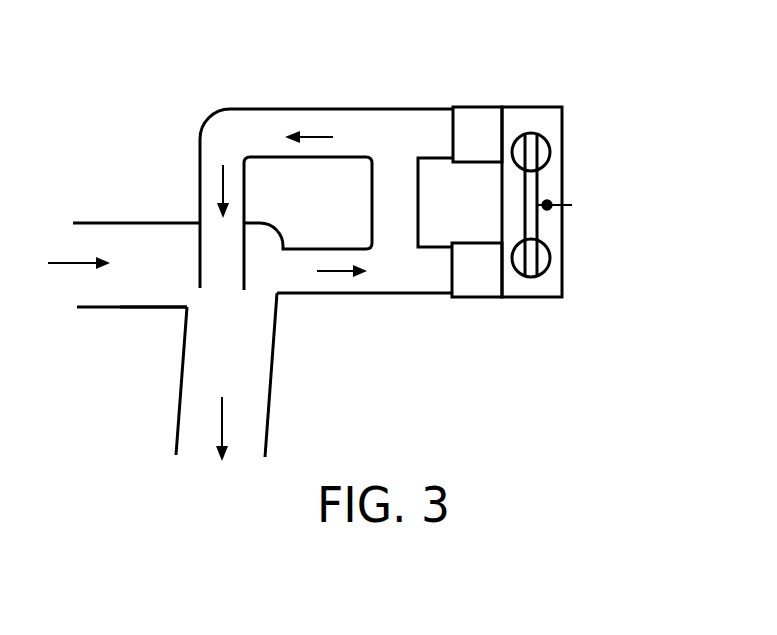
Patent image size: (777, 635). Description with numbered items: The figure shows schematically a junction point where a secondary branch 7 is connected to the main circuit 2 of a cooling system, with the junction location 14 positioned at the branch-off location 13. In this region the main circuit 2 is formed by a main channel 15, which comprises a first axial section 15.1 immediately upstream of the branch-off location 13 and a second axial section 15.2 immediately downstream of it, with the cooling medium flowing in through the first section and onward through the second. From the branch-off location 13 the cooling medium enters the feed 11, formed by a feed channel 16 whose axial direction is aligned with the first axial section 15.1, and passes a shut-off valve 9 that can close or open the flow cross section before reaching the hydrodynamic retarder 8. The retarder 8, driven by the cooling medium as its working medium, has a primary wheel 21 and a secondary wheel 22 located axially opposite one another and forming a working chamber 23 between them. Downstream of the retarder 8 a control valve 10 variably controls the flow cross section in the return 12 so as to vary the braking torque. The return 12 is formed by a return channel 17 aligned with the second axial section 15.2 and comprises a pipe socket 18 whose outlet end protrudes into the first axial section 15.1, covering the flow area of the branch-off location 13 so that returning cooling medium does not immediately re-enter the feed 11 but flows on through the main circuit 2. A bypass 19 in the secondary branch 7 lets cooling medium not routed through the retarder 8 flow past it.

The main circuit 2 is at (145, 401).
The secondary branch 7 is at (530, 64).
The hydrodynamic retarder 8 is at (540, 196).
The shut-off valve 9 is at (472, 290).
The control valve 10 is at (472, 127).
The feed 11 is at (320, 280).
The return 12 is at (210, 188).
The branch-off location 13 is at (280, 277).
The junction location 14 is at (205, 300).
The main channel 15 is at (80, 314).
The first axial section 15.1 is at (133, 308).
The second axial section 15.2 is at (177, 418).
The feed channel 16 is at (372, 293).
The return channel 17 is at (237, 109).
The pipe socket 18 is at (200, 256).
The bypass 19 is at (383, 190).
The primary wheel 21 is at (547, 147).
The secondary wheel 22 is at (532, 135).
The working chamber 23 is at (528, 267).